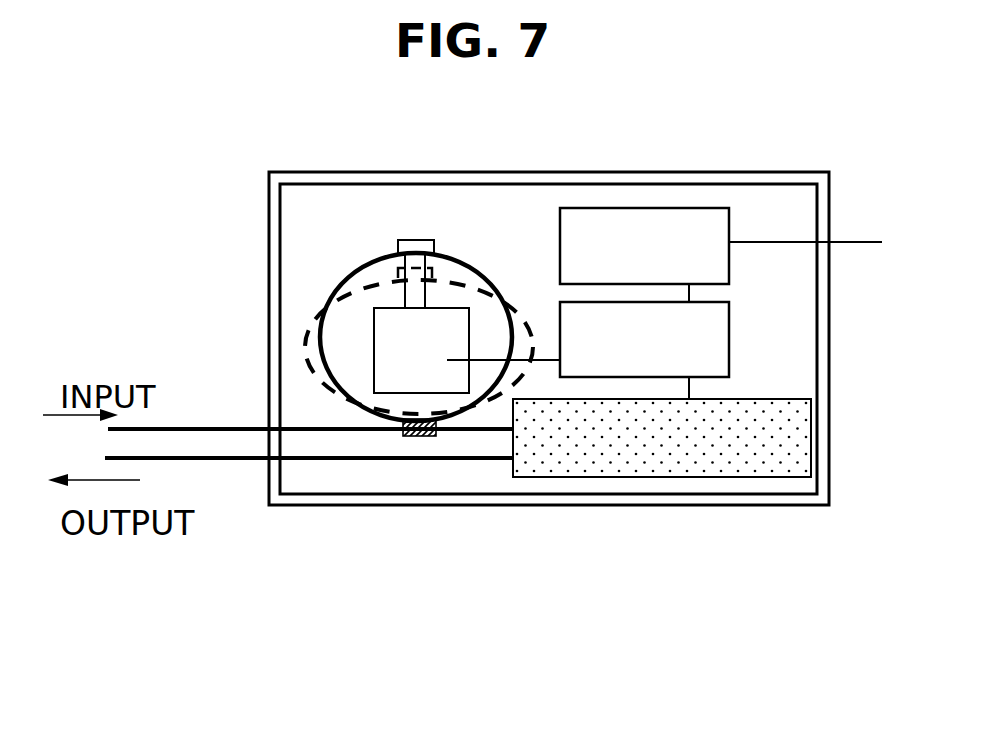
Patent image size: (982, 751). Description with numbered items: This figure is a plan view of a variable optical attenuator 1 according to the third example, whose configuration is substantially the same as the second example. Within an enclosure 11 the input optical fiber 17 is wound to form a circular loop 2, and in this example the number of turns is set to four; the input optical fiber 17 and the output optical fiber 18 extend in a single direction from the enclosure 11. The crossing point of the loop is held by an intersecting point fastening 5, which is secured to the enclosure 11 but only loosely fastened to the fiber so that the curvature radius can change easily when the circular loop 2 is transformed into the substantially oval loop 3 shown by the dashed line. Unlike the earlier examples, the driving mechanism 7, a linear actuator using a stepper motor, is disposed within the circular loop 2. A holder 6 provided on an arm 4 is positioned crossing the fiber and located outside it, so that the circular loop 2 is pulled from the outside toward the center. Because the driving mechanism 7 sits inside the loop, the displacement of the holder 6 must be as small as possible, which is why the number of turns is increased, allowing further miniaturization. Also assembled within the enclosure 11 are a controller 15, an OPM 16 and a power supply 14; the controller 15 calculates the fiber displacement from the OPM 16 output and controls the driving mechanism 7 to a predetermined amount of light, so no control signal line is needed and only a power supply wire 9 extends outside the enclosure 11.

The variable optical attenuator 1 is at (207, 192).
The circular loop 2 is at (332, 300).
The oval loop 3 is at (298, 348).
The arm 4 is at (418, 297).
The intersecting point fastening 5 is at (437, 437).
The holder 6 is at (405, 243).
The driving mechanism 7 is at (437, 335).
The power supply wire 9 is at (870, 242).
The enclosure 11 is at (625, 505).
The power supply 14 is at (670, 235).
The controller 15 is at (713, 345).
The OPM 16 is at (755, 455).
The input optical fiber 17 is at (232, 428).
The output optical fiber 18 is at (220, 459).